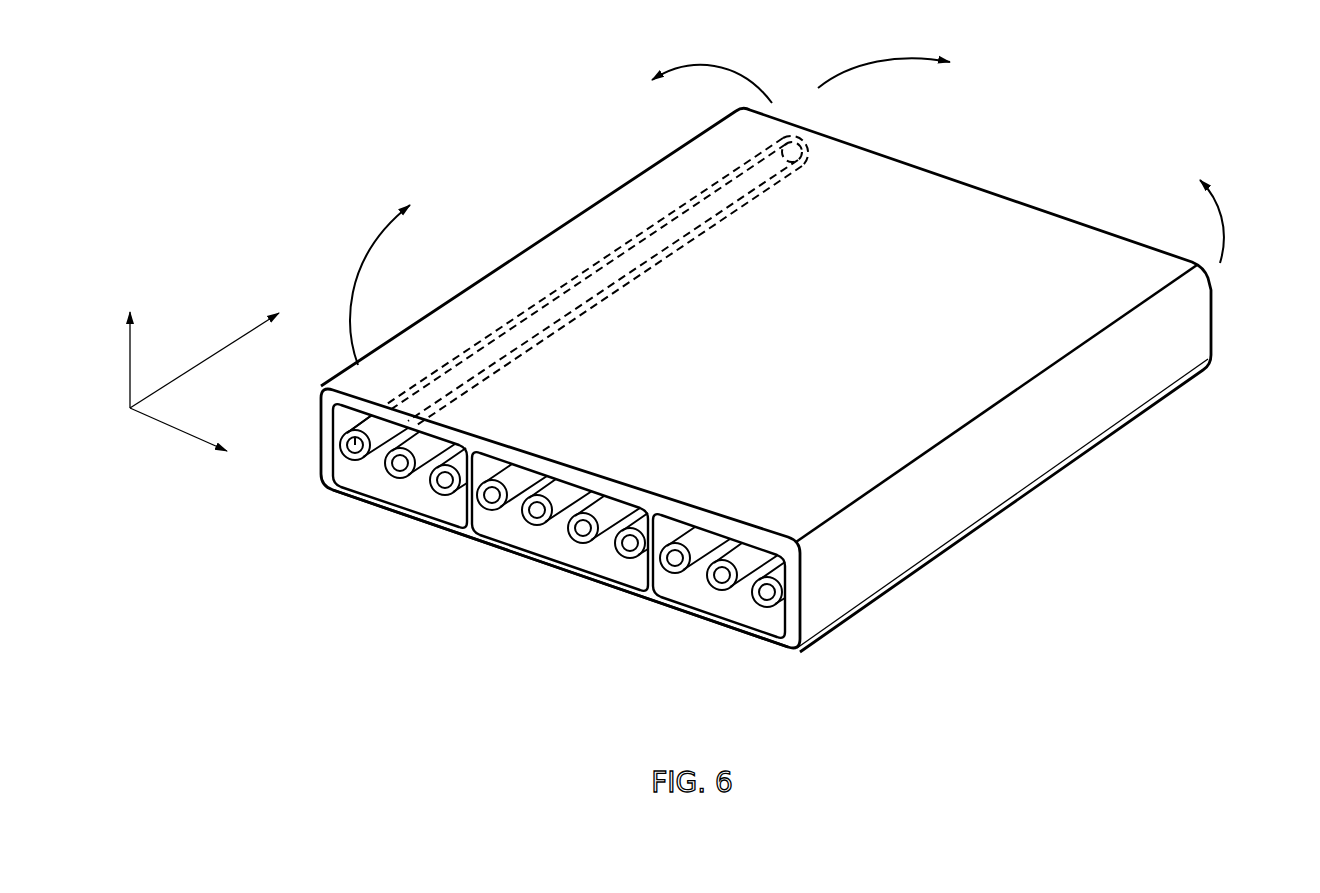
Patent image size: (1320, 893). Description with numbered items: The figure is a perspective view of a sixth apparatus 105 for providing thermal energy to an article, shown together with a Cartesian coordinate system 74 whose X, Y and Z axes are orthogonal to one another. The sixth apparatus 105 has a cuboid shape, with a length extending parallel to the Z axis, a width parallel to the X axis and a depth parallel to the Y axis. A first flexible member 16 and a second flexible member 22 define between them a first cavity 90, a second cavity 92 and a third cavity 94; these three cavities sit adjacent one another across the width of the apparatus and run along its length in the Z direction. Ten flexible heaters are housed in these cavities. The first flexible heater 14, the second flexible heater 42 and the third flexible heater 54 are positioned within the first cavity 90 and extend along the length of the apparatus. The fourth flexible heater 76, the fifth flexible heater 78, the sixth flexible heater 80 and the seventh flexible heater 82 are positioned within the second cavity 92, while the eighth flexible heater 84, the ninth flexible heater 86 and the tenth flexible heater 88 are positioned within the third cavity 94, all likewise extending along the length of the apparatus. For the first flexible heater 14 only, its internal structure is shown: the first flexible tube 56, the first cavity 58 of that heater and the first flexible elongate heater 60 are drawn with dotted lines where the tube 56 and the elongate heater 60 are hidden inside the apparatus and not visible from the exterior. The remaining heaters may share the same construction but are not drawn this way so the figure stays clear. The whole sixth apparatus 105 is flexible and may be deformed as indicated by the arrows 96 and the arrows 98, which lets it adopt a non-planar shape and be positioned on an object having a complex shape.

The sixth apparatus 105 is at (322, 93).
The Cartesian coordinate system 74 is at (186, 244).
The second flexible member 22 is at (980, 215).
The first flexible heater 14 is at (338, 497).
The first flexible member 16 is at (698, 618).
The first cavity 90 is at (344, 412).
The second cavity 92 is at (533, 545).
The third cavity 94 is at (763, 543).
The first flexible tube 56 is at (345, 460).
The first cavity of the first flexible heater 58 is at (350, 446).
The first flexible elongate heater 60 is at (356, 432).
The second flexible heater 42 is at (394, 482).
The third flexible heater 54 is at (439, 500).
The fourth flexible heater 76 is at (518, 474).
The fifth flexible heater 78 is at (562, 490).
The sixth flexible heater 80 is at (612, 505).
The seventh flexible heater 82 is at (643, 523).
The eighth flexible heater 84 is at (674, 573).
The ninth flexible heater 86 is at (750, 553).
The tenth flexible heater 88 is at (765, 607).
The arrows 96 is at (385, 235).
The arrows 98 is at (880, 55).